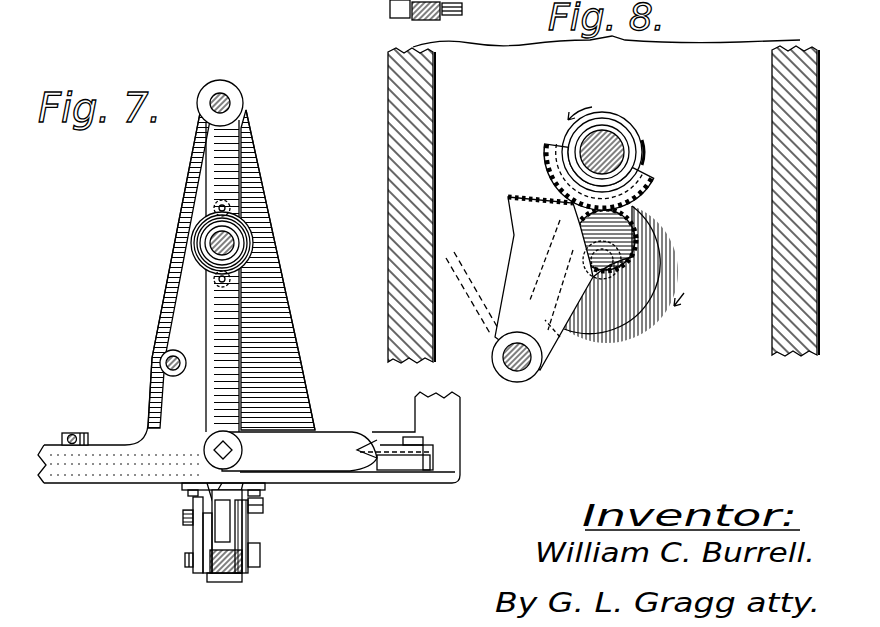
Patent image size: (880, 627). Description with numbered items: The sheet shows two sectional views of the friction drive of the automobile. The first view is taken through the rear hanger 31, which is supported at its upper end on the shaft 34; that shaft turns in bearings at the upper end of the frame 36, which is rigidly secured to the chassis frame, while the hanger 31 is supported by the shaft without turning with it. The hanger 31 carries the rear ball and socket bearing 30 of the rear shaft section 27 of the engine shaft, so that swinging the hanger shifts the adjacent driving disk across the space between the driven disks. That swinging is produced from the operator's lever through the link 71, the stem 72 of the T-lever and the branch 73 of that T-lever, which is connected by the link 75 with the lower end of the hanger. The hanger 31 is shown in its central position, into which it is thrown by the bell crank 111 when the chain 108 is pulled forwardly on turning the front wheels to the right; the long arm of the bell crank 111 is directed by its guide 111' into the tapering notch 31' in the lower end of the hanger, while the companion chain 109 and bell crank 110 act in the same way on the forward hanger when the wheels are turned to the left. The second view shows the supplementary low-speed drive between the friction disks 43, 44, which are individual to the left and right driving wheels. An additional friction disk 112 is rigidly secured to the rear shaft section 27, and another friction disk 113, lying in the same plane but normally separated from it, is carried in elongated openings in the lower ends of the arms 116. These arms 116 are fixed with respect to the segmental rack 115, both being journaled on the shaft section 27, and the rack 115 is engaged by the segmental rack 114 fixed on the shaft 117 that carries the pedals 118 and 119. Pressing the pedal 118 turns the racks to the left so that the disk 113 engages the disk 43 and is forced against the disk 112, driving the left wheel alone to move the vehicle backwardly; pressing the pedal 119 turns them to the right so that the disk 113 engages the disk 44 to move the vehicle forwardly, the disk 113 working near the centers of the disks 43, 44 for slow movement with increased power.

In FIG. 7, the rear shaft section 27 is at (236, 243).
In FIG. 8, the rear shaft section 27 is at (605, 137).
In FIG. 7, the rear ball and socket bearing 30 is at (204, 243).
In FIG. 7, the hanger 31 is at (205, 276).
In FIG. 7, the tapering notch 31' is at (199, 500).
In FIG. 7, the shaft 34 is at (232, 101).
In FIG. 7, the frame 36 is at (277, 362).
In FIG. 8, the friction disk 43 is at (427, 89).
In FIG. 8, the friction disk 44 is at (788, 72).
In FIG. 7, the link 71 is at (82, 436).
In FIG. 7, the stem 72 is at (95, 447).
In FIG. 7, the branch 73 is at (420, 462).
In FIG. 7, the link 75 is at (318, 448).
In FIG. 7, the chain 108 is at (256, 519).
In FIG. 7, the chain 109 is at (186, 562).
In FIG. 7, the bell crank 110 is at (197, 577).
In FIG. 7, the bell crank 111 is at (260, 531).
In FIG. 7, the guide 111' is at (193, 536).
In FIG. 8, the friction disk 112 is at (645, 142).
In FIG. 8, the friction disk 113 is at (667, 271).
In FIG. 8, the segmental rack 114 is at (518, 213).
In FIG. 8, the segmental rack 115 is at (655, 178).
In FIG. 8, the arms 116 is at (623, 223).
In FIG. 7, the shaft 117 is at (160, 363).
In FIG. 8, the shaft 117 is at (522, 365).
In FIG. 8, the pedal 118 is at (480, 310).
In FIG. 8, the pedal 119 is at (560, 337).